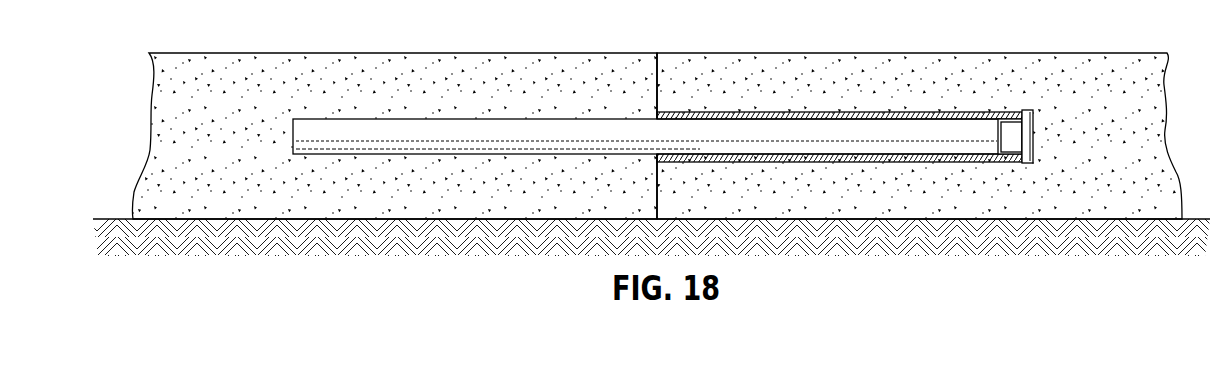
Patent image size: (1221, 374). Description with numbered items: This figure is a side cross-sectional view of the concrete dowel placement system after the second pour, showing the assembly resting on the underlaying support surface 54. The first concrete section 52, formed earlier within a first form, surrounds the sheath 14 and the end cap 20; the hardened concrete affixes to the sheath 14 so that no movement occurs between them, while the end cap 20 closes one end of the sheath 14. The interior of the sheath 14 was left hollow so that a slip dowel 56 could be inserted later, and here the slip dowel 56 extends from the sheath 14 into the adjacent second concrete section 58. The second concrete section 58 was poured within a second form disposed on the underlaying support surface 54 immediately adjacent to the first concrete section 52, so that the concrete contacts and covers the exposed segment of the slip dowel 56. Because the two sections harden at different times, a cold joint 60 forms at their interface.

The sheath 14 is at (708, 110).
The end cap 20 is at (1020, 110).
The first concrete section 52 is at (1100, 72).
The underlaying support surface 54 is at (1068, 264).
The slip dowel 56 is at (496, 125).
The second concrete section 58 is at (198, 72).
The cold joint 60 is at (657, 78).